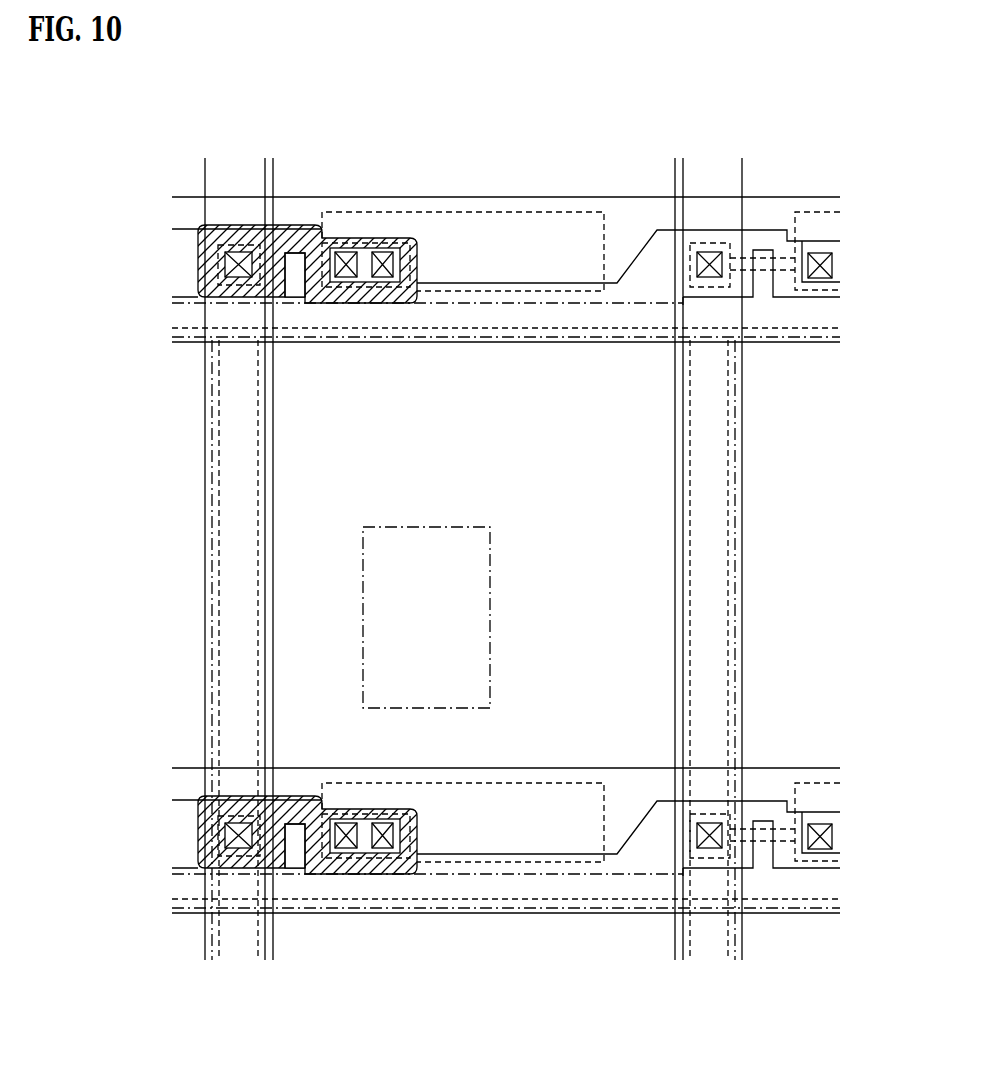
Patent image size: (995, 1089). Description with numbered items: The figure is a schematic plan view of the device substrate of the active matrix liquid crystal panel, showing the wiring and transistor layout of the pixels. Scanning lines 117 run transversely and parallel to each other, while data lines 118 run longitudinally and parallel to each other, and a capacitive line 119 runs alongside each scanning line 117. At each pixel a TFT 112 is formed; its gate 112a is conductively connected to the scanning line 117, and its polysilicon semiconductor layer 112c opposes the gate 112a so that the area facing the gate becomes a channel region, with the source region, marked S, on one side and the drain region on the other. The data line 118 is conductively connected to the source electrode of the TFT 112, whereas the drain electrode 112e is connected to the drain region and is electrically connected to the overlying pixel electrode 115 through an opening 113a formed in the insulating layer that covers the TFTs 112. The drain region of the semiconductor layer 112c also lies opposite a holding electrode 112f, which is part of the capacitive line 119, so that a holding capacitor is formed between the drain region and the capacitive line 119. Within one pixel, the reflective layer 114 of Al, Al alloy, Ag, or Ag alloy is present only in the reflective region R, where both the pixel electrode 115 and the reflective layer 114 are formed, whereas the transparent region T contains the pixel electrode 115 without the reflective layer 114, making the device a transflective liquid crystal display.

The TFT 112 is at (186, 798).
The gate 112a is at (293, 270).
The semiconductor layer 112c is at (498, 212).
The drain electrode 112e is at (363, 285).
The holding electrode 112f is at (512, 284).
The opening 113a is at (415, 240).
The reflective layer 114 is at (680, 458).
The pixel electrode 115 is at (685, 527).
The scanning line 117 is at (371, 345).
The data line 118 is at (207, 430).
The capacitive line 119 is at (185, 197).
The source region S is at (193, 262).
The reflective region R is at (590, 467).
The transparent region T is at (447, 623).